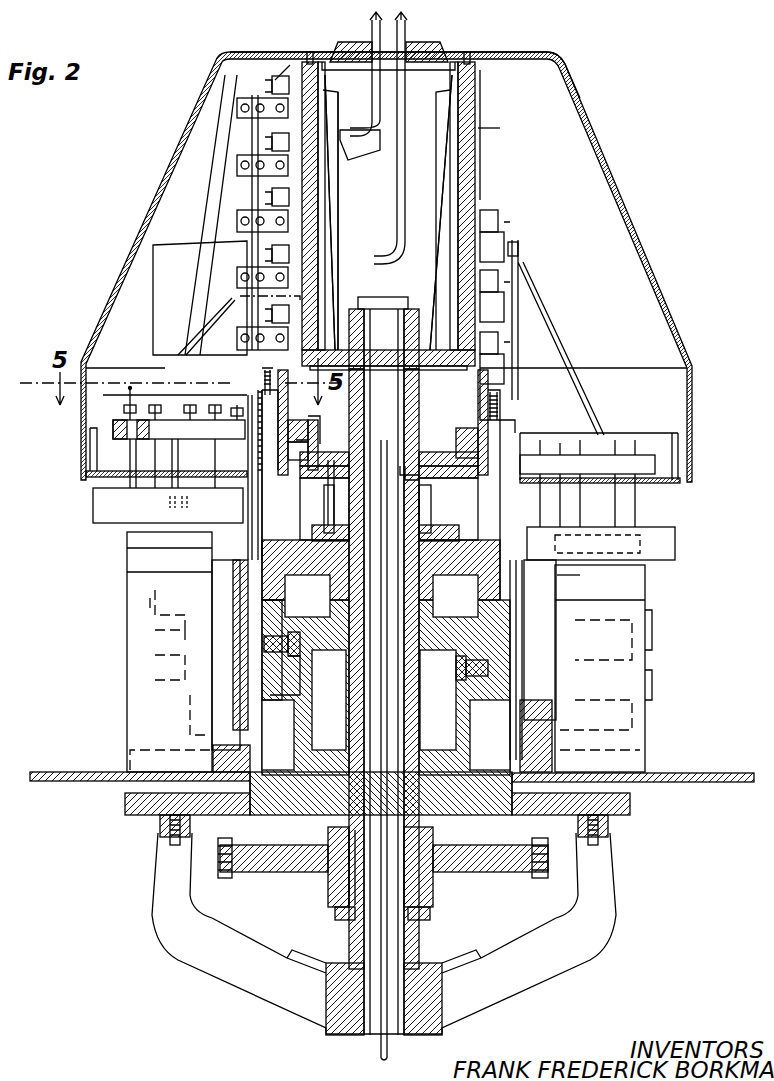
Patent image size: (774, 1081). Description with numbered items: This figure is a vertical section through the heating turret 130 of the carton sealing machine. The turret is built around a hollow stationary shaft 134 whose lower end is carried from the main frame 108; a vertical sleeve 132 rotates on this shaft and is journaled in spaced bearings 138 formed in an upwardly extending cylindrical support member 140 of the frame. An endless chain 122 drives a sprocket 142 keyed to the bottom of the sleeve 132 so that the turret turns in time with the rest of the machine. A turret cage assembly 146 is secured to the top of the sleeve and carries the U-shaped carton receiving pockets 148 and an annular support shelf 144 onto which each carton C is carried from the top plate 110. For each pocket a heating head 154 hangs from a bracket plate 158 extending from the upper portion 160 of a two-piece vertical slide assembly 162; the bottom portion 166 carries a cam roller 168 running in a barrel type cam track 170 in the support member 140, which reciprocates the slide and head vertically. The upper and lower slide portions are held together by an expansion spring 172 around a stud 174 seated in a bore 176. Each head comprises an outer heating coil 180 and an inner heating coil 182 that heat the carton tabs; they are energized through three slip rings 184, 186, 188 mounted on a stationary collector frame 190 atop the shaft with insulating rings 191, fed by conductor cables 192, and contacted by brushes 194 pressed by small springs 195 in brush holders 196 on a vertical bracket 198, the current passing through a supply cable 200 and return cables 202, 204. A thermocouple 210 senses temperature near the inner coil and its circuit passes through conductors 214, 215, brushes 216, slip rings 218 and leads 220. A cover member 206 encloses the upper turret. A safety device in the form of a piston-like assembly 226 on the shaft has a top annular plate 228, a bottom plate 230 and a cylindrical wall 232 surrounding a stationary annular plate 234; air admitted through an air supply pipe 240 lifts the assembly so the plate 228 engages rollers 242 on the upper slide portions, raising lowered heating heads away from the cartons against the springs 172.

The main frame 108 is at (630, 806).
The top plate 110 is at (712, 772).
The endless chain 122 is at (535, 878).
The heating turret 130 is at (645, 210).
The vertical sleeve 132 is at (348, 880).
The hollow stationary shaft 134 is at (400, 948).
The bearings 138 is at (336, 742).
The cylindrical support member 140 is at (470, 782).
The sprocket 142 is at (484, 868).
The annular support shelf 144 is at (632, 776).
The turret cage assembly 146 is at (235, 571).
The carton receiving pocket 148 is at (210, 632).
The heating head 154 is at (84, 513).
The bracket plate 158 is at (110, 426).
The upper portion of slide assembly 160 is at (250, 553).
The vertical slide assembly 162 is at (516, 580).
The bottom portion of slide assembly 166 is at (272, 600).
The cam roller 168 is at (298, 644).
The barrel type cam track 170 is at (300, 690).
The expansion spring 172 is at (262, 376).
The stud 174 is at (258, 516).
The bore 176 is at (242, 488).
The outer heating coil 180 is at (155, 453).
The inner heating coil 182 is at (100, 470).
The slip ring 184 is at (352, 208).
The slip ring 186 is at (240, 292).
The slip ring 188 is at (380, 278).
The stationary collector frame 190 is at (438, 140).
The insulating rings 191 is at (440, 230).
The electrical conductor cables 192 is at (360, 265).
The brushes 194 is at (300, 183).
The small springs 195 is at (518, 231).
The brush holders 196 is at (275, 80).
The vertical bracket 198 is at (270, 216).
The supply cable 200 is at (150, 268).
The return cable 202 is at (232, 320).
The return cable 204 is at (238, 234).
The cover member 206 is at (580, 100).
The thermocouple 210 is at (150, 408).
The conductor 214 is at (240, 140).
The conductor 215 is at (230, 163).
The brushes 216 is at (268, 78).
The slip rings 218 is at (478, 120).
The leads 220 is at (370, 30).
The piston-like assembly 226 is at (348, 435).
The top annular plate 228 is at (420, 445).
The bottom plate 230 is at (440, 530).
The cylindrical wall 232 is at (324, 500).
The stationary annular plate 234 is at (410, 480).
The air supply pipe 240 is at (378, 1056).
The rollers 242 is at (525, 430).
The carton C is at (125, 623).